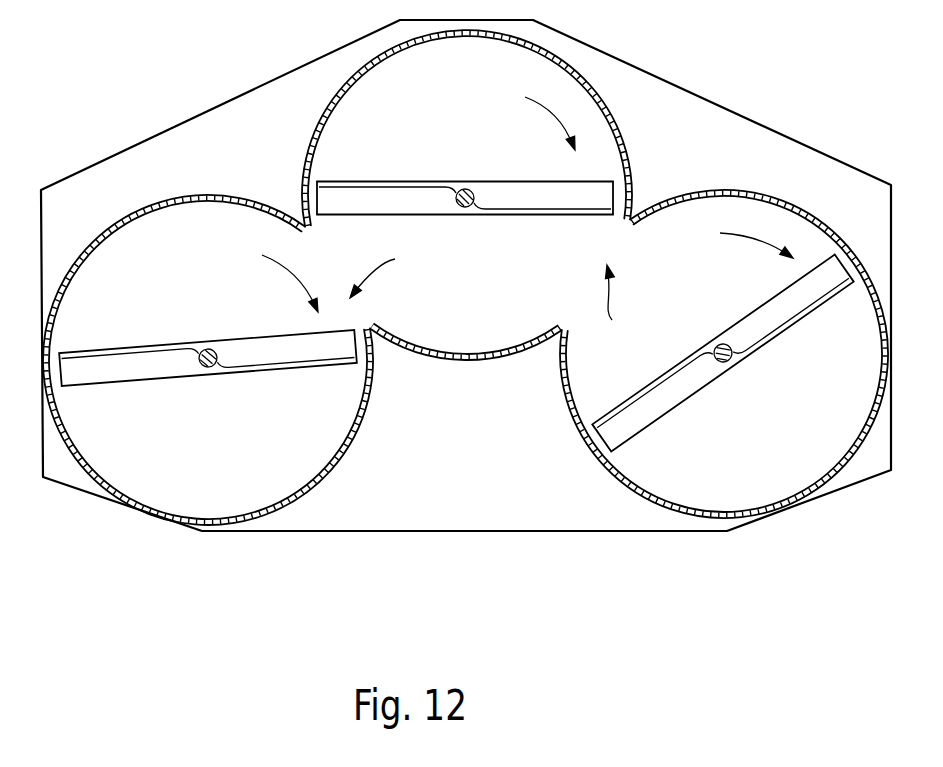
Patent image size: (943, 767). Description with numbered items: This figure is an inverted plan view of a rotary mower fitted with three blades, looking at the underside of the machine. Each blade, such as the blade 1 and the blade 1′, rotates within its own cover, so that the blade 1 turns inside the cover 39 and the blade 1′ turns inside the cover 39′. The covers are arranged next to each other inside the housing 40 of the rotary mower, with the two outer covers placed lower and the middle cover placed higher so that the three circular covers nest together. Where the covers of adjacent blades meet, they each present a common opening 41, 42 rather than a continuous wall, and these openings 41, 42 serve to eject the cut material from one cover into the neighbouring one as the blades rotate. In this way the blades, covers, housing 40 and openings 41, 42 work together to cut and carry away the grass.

The blade 1 is at (252, 380).
The blade 1′ is at (506, 221).
The cover 39 is at (338, 458).
The cover 39′ is at (480, 360).
The housing 40 is at (487, 531).
The common opening 41 is at (395, 259).
The common opening 42 is at (612, 320).